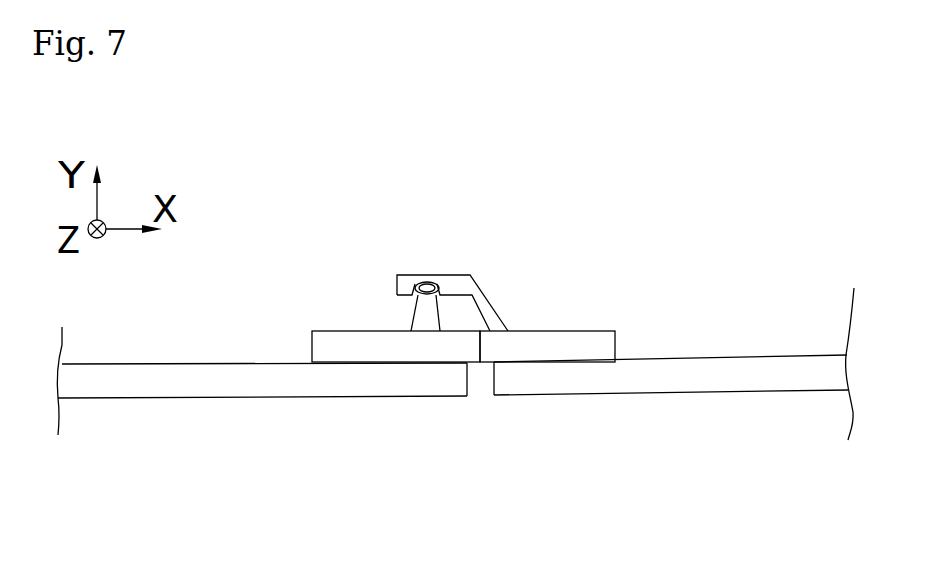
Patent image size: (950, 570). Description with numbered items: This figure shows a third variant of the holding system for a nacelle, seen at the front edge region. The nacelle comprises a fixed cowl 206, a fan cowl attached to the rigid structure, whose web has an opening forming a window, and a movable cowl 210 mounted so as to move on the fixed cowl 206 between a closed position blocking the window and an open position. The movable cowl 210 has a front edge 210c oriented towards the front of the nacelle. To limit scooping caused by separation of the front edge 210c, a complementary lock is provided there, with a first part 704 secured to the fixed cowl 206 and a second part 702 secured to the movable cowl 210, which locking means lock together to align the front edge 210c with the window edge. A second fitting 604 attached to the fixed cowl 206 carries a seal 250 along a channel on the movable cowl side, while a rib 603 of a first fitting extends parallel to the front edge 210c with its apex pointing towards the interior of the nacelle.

The movable cowl 210 is at (93, 390).
The front edge 210c is at (467, 378).
The fixed cowl 206 is at (760, 378).
The second part 702 is at (332, 347).
The first part 704 is at (598, 342).
The second fitting 604 is at (483, 305).
The seal 250 is at (425, 287).
The rib 603 is at (427, 317).